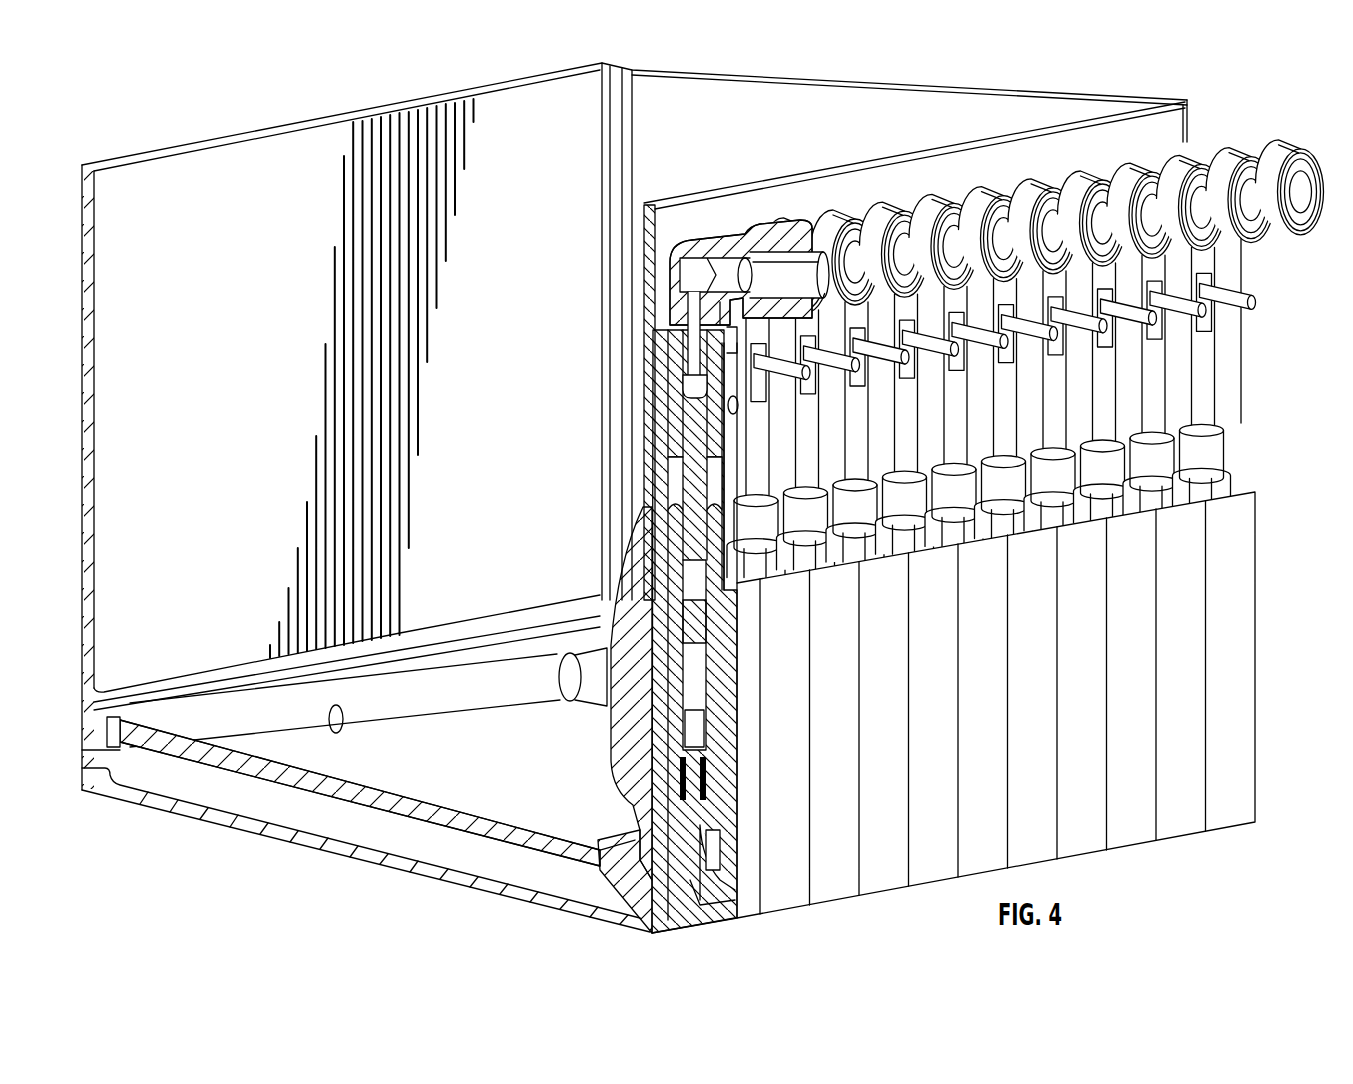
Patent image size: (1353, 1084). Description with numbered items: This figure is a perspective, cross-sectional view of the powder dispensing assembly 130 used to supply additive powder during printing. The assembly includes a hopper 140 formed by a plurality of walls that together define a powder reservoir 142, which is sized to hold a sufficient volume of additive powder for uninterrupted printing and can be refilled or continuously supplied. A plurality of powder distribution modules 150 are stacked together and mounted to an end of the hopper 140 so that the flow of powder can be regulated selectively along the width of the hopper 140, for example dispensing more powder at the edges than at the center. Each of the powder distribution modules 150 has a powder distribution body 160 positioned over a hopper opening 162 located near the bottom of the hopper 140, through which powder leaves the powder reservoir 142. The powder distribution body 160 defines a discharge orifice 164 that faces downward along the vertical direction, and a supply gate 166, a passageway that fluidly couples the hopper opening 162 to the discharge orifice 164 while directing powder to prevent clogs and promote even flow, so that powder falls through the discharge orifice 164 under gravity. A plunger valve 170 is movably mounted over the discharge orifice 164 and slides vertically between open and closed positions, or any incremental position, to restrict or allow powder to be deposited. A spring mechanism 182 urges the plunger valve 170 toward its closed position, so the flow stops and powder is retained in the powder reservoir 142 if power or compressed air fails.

The powder dispensing assembly 130 is at (1198, 78).
The hopper 140 is at (148, 178).
The powder reservoir 142 is at (260, 384).
The powder distribution modules 150 is at (1132, 801).
The powder distribution body 160 is at (727, 828).
The hopper opening 162 is at (614, 824).
The discharge orifice 164 is at (707, 901).
The supply gate 166 is at (651, 866).
The plunger valve 170 is at (697, 824).
The spring mechanism 182 is at (663, 282).